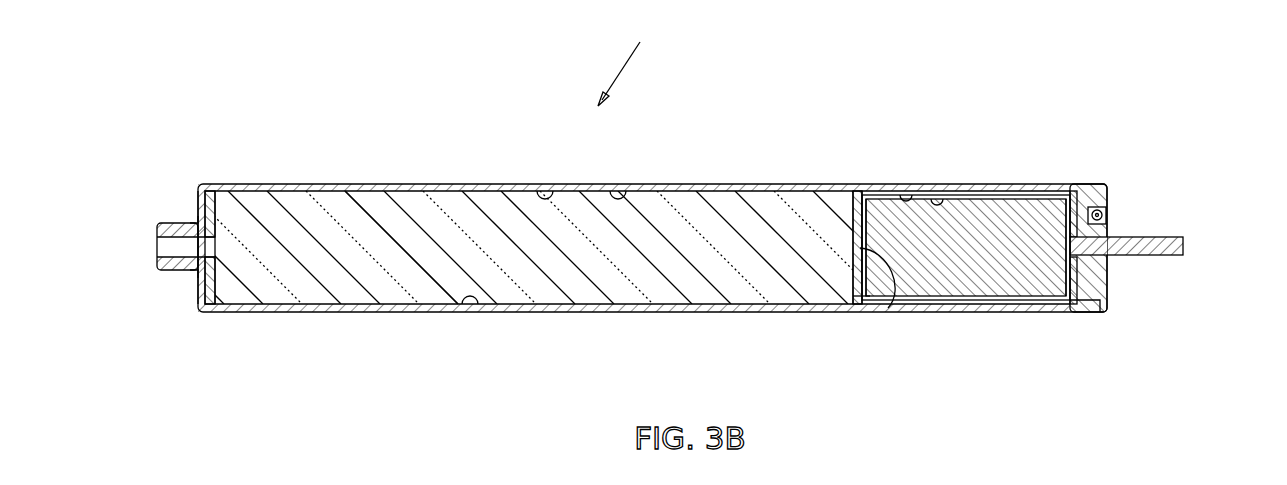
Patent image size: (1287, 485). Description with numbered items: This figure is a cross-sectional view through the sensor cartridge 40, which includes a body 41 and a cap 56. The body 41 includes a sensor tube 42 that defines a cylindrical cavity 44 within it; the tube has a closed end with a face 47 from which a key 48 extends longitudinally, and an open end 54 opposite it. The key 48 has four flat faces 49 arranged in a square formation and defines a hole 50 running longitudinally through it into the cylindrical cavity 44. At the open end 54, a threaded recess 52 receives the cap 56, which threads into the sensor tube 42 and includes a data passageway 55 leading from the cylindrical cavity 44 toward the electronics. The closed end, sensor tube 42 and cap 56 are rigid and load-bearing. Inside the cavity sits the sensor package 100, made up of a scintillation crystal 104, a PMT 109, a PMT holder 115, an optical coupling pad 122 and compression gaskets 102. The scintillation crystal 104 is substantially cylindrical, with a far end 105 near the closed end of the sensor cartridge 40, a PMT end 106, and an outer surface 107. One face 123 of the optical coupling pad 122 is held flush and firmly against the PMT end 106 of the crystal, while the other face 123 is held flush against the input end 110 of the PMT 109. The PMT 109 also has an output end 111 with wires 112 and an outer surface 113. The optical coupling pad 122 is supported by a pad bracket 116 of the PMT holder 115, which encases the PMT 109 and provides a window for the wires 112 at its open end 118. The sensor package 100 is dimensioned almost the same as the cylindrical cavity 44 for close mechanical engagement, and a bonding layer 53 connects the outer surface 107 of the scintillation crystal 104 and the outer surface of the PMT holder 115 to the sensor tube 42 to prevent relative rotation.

The sensor cartridge 40 is at (621, 57).
The body 41 is at (455, 186).
The sensor tube 42 is at (350, 186).
The cylindrical cavity 44 is at (620, 191).
The face 47 is at (198, 194).
The key 48 is at (168, 228).
The flat faces 49 is at (183, 222).
The hole 50 is at (173, 247).
The threaded recess 52 is at (1100, 300).
The bonding layer 53 is at (545, 191).
The open end 54 is at (1097, 190).
The data passageway 55 is at (1108, 228).
The cap 56 is at (1103, 197).
The sensor package 100 is at (628, 265).
The compression gaskets 102 is at (203, 287).
The scintillation crystal 104 is at (363, 263).
The far end 105 is at (224, 248).
The PMT end 106 is at (850, 297).
The outer surface 107 is at (470, 304).
The PMT 109 is at (928, 248).
The input end 110 is at (890, 255).
The output end 111 is at (1045, 288).
The wires 112 is at (1180, 255).
The outer surface 113 is at (943, 197).
The PMT holder 115 is at (888, 308).
The pad bracket 116 is at (860, 298).
The open end 118 is at (1058, 312).
The optical coupling pad 122 is at (851, 232).
The face 123 is at (853, 207).